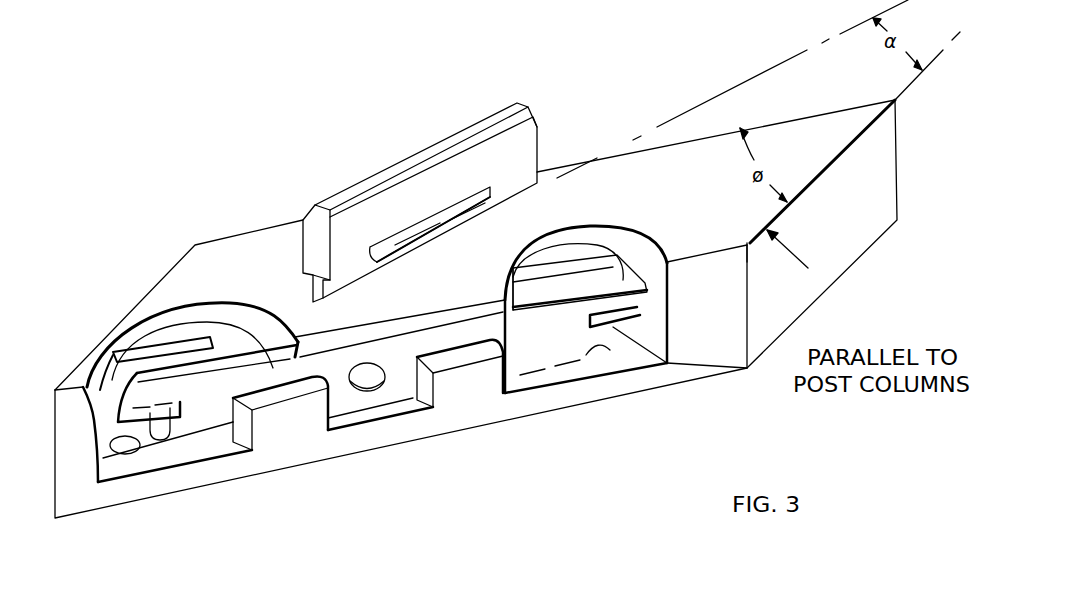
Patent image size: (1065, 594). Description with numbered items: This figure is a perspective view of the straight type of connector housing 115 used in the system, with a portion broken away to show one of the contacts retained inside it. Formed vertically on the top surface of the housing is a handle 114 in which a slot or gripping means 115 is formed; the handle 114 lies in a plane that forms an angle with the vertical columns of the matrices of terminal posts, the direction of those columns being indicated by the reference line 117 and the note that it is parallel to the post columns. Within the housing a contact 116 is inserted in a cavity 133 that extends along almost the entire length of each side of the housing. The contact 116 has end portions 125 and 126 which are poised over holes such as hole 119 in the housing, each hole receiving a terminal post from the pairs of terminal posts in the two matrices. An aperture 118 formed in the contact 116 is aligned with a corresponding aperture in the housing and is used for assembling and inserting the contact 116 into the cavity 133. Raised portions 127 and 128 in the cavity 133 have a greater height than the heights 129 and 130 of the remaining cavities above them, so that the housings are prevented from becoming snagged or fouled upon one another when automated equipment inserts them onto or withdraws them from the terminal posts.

The handle 114 is at (528, 118).
The slot or gripping means 115 is at (669, 201).
The contact 116 is at (562, 353).
The reference line 117 is at (782, 63).
The aperture 118 is at (360, 393).
The hole 119 is at (123, 450).
The end portion 125 is at (158, 447).
The end portion 126 is at (628, 313).
The raised portion 127 is at (267, 433).
The raised portion 128 is at (480, 385).
The height 129 is at (270, 372).
The height 130 is at (451, 338).
The cavity 133 is at (400, 383).